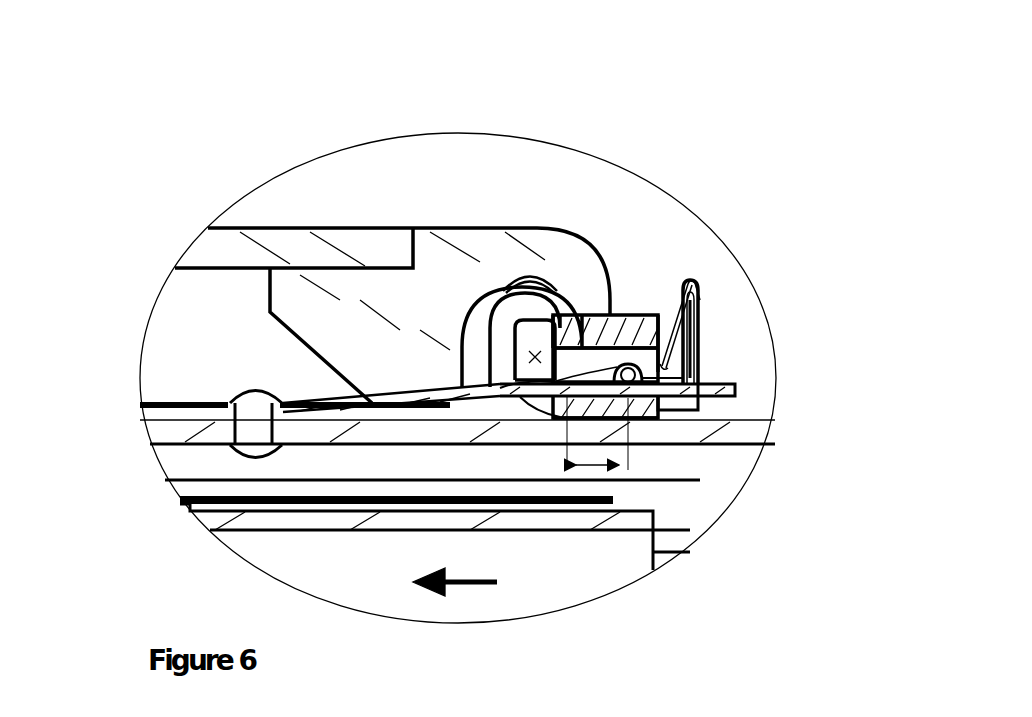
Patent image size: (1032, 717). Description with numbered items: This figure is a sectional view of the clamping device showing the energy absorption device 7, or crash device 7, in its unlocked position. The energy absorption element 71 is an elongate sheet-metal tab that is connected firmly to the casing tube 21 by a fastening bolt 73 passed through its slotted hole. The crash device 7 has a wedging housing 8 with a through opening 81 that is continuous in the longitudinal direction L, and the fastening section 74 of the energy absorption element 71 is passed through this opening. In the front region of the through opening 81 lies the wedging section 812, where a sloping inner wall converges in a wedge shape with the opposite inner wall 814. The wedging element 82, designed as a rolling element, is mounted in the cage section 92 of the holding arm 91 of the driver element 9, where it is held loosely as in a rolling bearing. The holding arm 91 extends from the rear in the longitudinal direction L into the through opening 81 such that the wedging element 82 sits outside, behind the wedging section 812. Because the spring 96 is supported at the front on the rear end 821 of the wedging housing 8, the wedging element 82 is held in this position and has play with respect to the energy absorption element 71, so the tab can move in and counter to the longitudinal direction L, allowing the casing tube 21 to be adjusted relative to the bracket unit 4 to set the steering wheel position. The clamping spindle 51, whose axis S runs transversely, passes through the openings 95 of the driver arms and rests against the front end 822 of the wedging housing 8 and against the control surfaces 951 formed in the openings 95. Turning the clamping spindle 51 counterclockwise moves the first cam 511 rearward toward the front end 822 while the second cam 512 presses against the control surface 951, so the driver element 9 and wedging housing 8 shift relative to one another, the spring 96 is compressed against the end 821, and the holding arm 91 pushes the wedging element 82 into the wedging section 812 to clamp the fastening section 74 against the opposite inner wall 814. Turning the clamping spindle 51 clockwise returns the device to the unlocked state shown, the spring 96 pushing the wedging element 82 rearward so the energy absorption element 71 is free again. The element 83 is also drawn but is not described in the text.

The bracket unit 4 is at (283, 249).
The axis of the clamping spindle S is at (385, 386).
The energy absorption element 71 is at (400, 392).
The fastening bolt 73 is at (258, 420).
The casing tube 21 is at (713, 433).
The openings 95 is at (517, 303).
The control surfaces 951 is at (497, 380).
The second cam 512 is at (526, 290).
The clamping spindle 51 is at (527, 320).
The first cam 511 is at (555, 382).
The wedging housing 8 is at (612, 316).
The through opening 81 is at (616, 294).
The front end of the wedging housing 822 is at (556, 316).
The cage section 92 is at (612, 320).
The wedging element 82 is at (636, 340).
The rear end of the wedging housing 821 is at (672, 330).
The wedging section 812 is at (578, 402).
The opposite inner wall 814 is at (648, 408).
The holding arm 91 is at (640, 382).
The fastening section 74 is at (720, 380).
The driver element 9 is at (708, 357).
The inner pin 83 is at (702, 338).
The energy absorption device 7 is at (722, 302).
The spring 96 is at (705, 312).
The longitudinal direction L is at (470, 584).